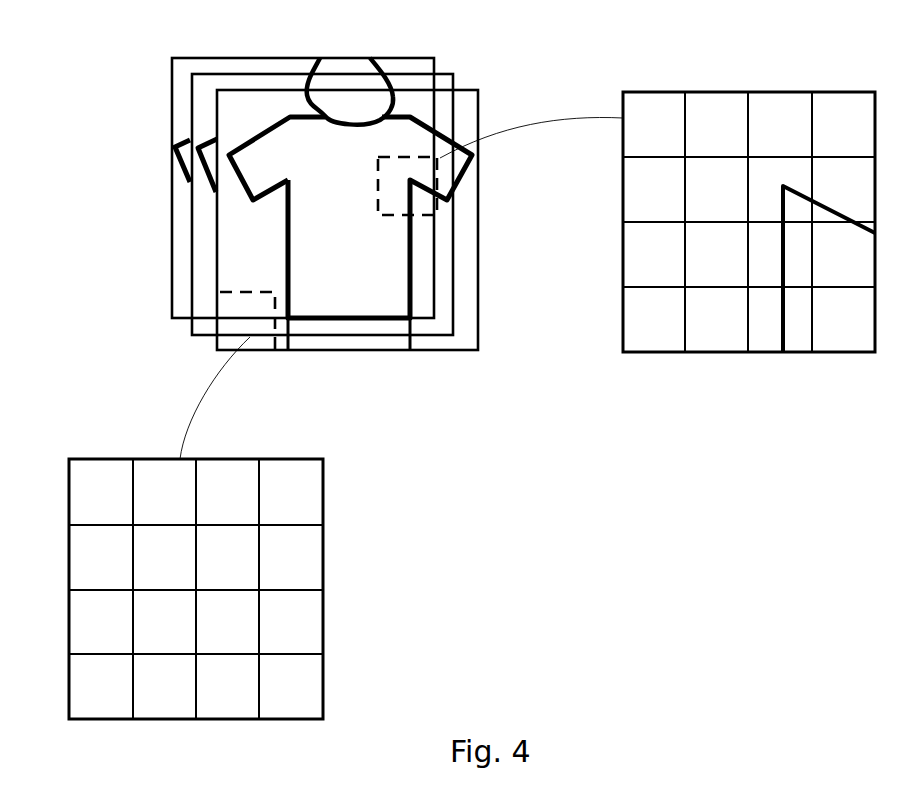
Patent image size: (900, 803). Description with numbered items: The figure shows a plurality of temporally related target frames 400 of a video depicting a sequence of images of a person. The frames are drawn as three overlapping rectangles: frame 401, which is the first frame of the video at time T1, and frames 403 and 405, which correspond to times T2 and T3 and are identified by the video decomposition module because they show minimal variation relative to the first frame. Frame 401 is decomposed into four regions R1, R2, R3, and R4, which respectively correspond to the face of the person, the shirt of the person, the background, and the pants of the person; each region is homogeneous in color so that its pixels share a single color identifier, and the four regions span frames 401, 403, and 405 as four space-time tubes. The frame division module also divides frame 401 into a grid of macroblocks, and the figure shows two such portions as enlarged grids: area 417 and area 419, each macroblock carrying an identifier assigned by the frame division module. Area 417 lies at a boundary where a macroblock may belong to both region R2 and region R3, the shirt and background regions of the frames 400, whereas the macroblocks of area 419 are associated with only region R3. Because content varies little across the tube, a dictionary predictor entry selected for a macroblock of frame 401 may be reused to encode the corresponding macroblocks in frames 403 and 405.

The target frames 400 is at (336, 38).
The frame 401 is at (304, 229).
The frame 403 is at (266, 216).
The frame 405 is at (251, 193).
The area 417 is at (653, 78).
The area 419 is at (110, 457).
The region R1 is at (362, 97).
The region R2 is at (273, 152).
The region R3 is at (237, 235).
The region R4 is at (317, 337).
The time T1 is at (342, 236).
The time T2 is at (167, 75).
The time T3 is at (135, 55).